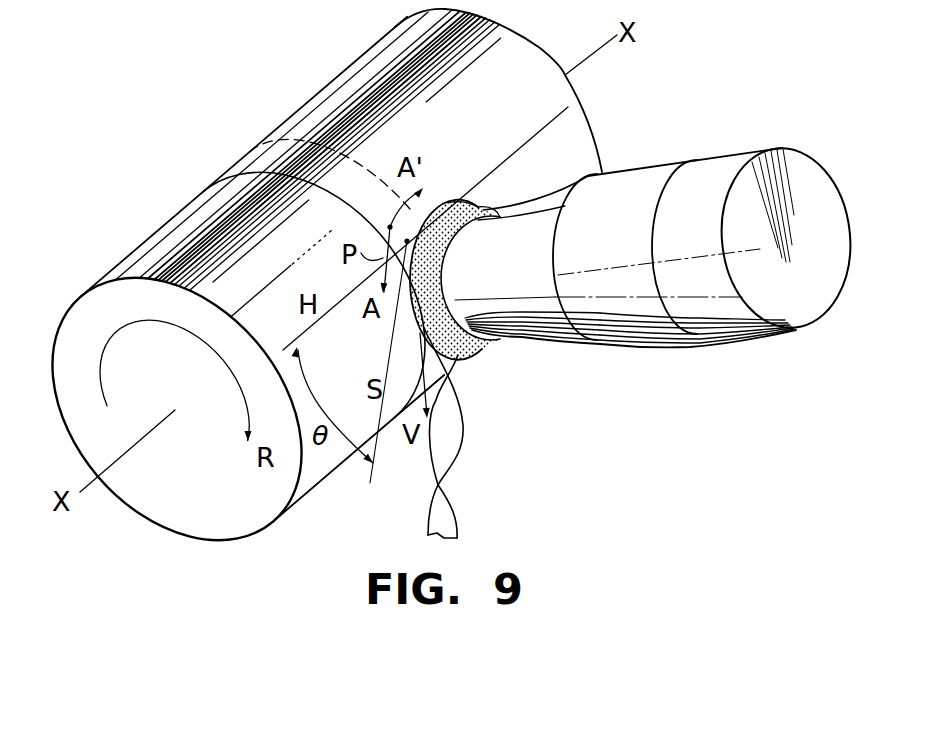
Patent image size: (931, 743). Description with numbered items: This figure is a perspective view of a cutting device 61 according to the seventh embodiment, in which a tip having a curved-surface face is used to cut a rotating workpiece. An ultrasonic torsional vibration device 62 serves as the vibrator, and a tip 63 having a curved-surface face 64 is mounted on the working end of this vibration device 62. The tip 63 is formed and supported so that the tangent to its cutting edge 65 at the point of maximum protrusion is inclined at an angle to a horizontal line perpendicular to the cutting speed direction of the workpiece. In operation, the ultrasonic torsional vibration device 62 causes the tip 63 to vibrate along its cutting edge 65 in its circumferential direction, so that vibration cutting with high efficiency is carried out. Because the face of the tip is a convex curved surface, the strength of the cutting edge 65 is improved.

The cutting device 61 is at (634, 221).
The ultrasonic torsional vibration device 62 is at (647, 174).
The tip 63 is at (455, 192).
The curved-surface face 64 is at (477, 203).
The cutting edge 65 is at (437, 200).